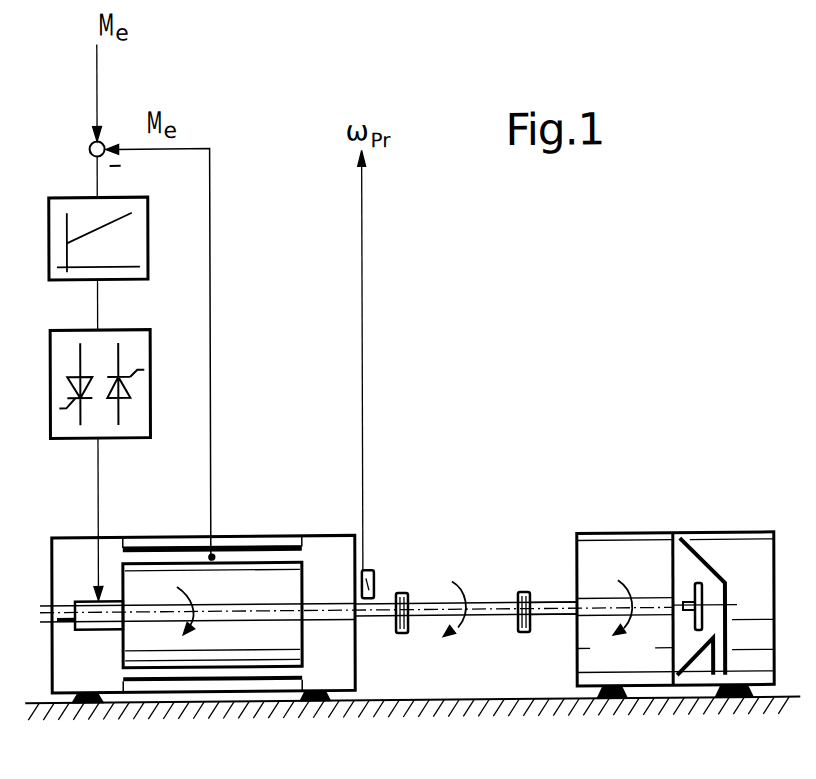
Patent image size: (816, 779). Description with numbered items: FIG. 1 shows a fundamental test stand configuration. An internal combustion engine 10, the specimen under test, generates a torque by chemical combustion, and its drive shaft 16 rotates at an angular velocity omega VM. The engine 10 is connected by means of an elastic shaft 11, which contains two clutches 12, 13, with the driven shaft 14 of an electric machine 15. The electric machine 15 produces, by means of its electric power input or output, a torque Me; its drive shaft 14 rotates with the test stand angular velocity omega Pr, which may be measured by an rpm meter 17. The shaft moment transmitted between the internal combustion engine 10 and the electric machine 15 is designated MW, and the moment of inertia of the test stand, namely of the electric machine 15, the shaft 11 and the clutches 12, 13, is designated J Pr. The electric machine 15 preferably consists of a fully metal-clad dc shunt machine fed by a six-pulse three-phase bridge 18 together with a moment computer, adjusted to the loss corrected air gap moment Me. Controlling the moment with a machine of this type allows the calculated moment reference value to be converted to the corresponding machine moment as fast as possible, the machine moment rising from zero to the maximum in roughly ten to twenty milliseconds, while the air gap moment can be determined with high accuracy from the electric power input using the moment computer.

The internal combustion engine 10 is at (609, 548).
The elastic shaft 11 is at (482, 603).
The clutch 12 is at (524, 592).
The clutch 13 is at (405, 594).
The driven shaft 14 is at (343, 606).
The electric machine 15 is at (252, 584).
The drive shaft 16 is at (557, 603).
The rpm meter 17 is at (375, 577).
The 6-pulse three-phase bridge 18 is at (134, 418).